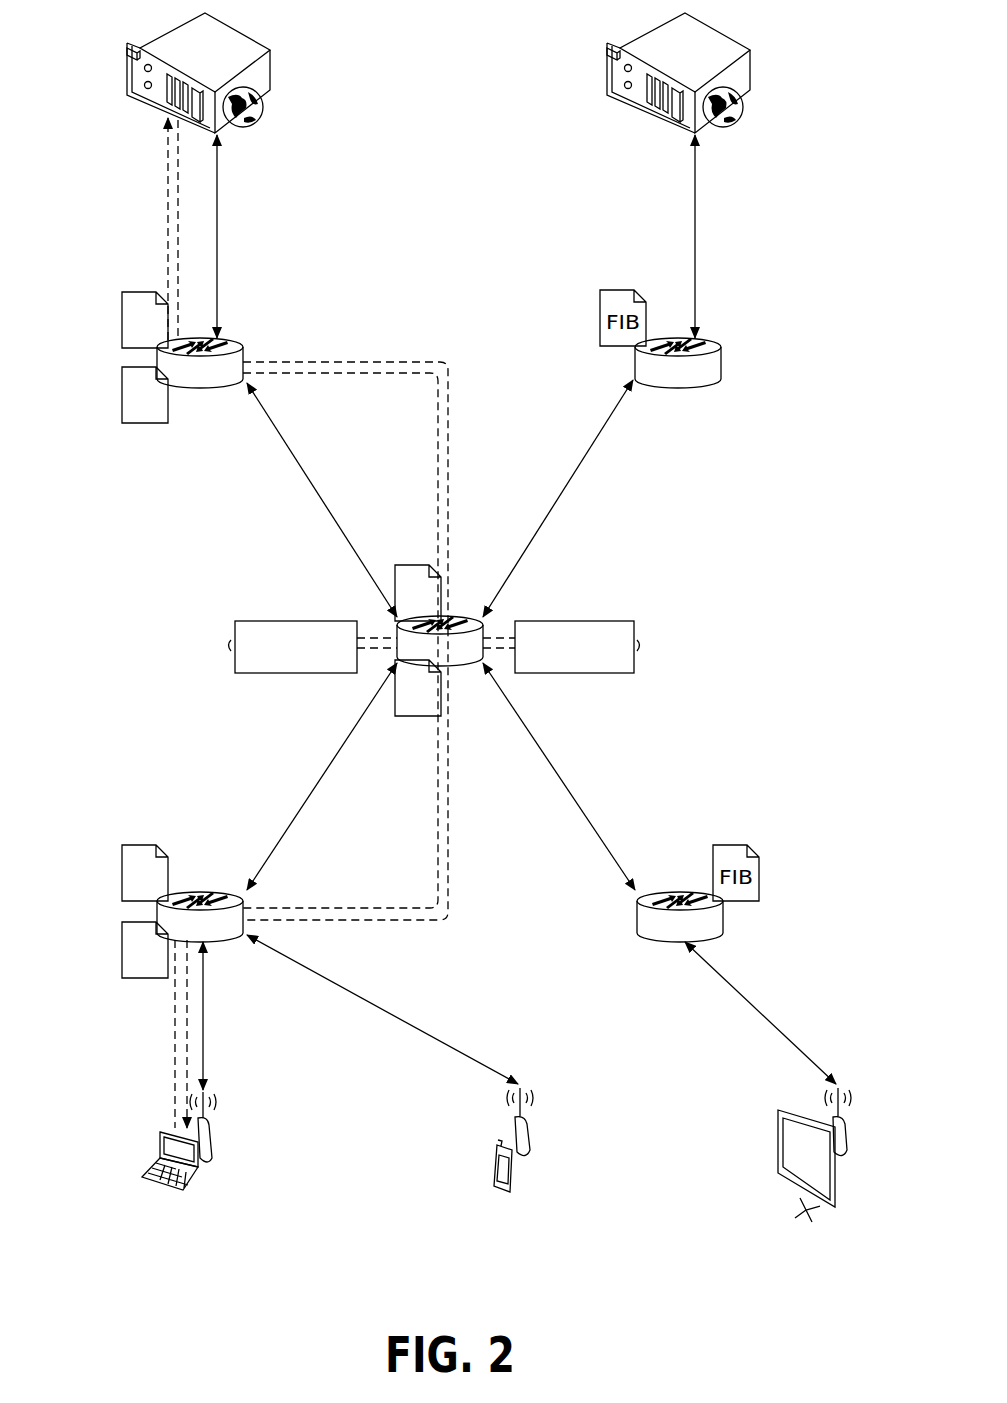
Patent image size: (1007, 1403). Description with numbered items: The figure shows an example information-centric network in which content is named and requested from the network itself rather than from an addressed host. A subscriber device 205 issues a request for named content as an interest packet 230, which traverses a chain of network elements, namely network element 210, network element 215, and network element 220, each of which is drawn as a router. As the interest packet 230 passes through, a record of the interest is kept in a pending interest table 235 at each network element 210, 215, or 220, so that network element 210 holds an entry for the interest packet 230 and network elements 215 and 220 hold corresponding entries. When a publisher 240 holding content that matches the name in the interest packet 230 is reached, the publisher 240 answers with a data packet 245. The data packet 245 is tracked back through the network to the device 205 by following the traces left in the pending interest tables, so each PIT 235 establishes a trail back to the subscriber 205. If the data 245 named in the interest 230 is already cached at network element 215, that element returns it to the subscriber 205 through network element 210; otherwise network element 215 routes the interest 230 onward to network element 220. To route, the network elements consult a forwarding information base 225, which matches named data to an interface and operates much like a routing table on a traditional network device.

The device 205 is at (162, 1135).
The network element 210 is at (205, 940).
The network element 215 is at (460, 660).
The network element 220 is at (244, 345).
The forwarding information base 225 is at (122, 875).
The interest packet 230 is at (296, 621).
The pending interest table 235 is at (122, 948).
The publisher 240 is at (168, 30).
The data packet 245 is at (577, 621).